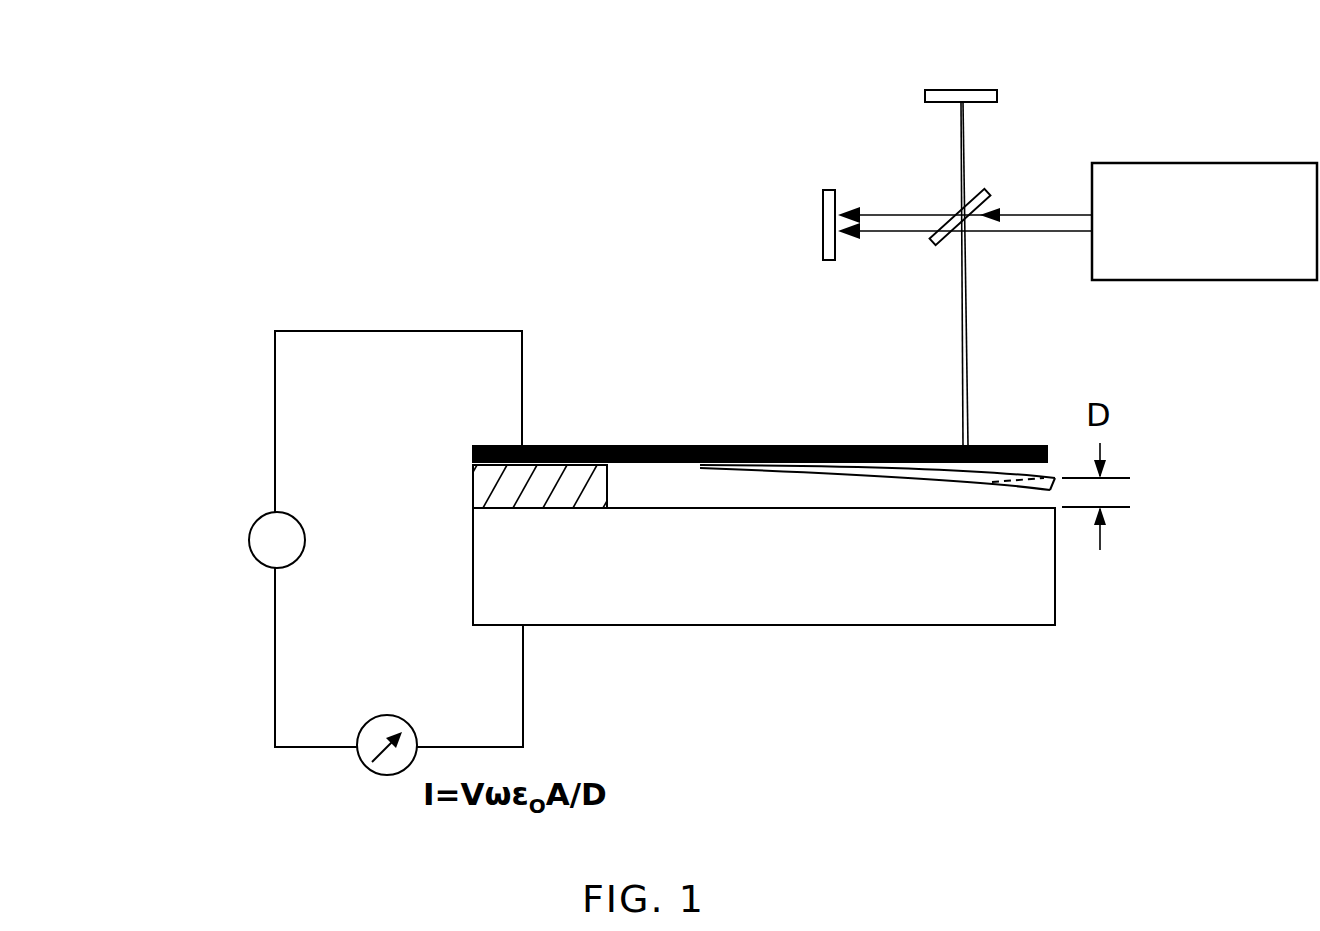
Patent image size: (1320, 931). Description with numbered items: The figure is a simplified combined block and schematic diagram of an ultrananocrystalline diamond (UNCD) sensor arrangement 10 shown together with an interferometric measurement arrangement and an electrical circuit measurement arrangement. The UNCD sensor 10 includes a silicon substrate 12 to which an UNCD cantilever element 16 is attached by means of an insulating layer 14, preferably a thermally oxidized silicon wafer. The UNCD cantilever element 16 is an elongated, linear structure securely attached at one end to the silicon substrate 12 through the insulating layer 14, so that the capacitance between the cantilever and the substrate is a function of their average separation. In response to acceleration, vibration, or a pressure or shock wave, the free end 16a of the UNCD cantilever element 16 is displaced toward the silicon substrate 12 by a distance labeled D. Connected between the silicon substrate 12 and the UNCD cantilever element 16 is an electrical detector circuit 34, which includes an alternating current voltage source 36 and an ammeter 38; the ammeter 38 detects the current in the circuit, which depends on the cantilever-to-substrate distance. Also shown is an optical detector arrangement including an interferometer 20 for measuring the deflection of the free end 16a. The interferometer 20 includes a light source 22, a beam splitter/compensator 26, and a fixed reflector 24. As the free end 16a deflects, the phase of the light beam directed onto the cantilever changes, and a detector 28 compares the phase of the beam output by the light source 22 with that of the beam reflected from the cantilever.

The UNCD sensor arrangement 10 is at (468, 186).
The silicon substrate 12 is at (900, 602).
The insulating layer 14 is at (487, 487).
The UNCD cantilever element 16 is at (603, 445).
The free end 16a is at (990, 473).
The interferometer 20 is at (848, 84).
The light source 22 is at (1282, 209).
The fixed reflector 24 is at (973, 89).
The beam splitter/compensator 26 is at (983, 193).
The detector 28 is at (823, 210).
The electrical detector circuit 34 is at (220, 398).
The alternating current voltage source 36 is at (253, 528).
The ammeter 38 is at (368, 757).